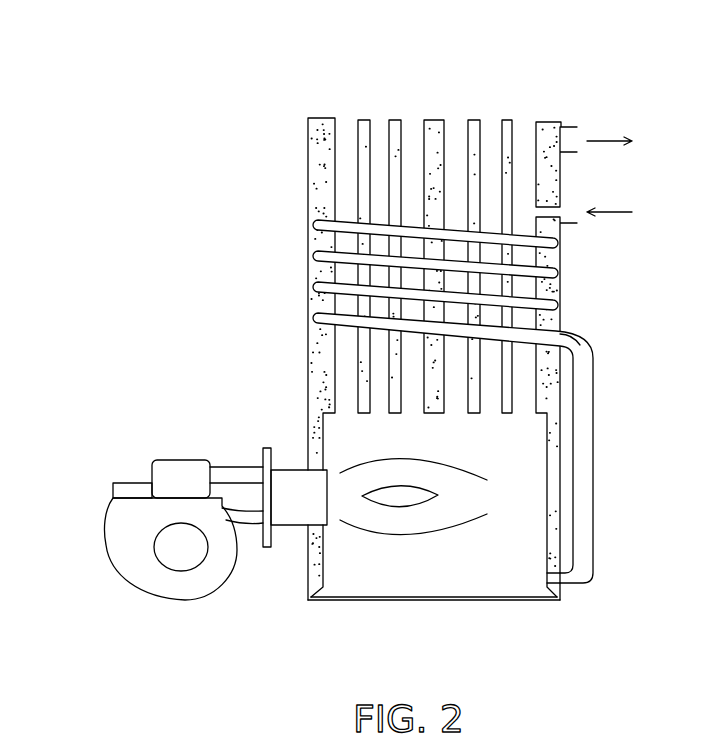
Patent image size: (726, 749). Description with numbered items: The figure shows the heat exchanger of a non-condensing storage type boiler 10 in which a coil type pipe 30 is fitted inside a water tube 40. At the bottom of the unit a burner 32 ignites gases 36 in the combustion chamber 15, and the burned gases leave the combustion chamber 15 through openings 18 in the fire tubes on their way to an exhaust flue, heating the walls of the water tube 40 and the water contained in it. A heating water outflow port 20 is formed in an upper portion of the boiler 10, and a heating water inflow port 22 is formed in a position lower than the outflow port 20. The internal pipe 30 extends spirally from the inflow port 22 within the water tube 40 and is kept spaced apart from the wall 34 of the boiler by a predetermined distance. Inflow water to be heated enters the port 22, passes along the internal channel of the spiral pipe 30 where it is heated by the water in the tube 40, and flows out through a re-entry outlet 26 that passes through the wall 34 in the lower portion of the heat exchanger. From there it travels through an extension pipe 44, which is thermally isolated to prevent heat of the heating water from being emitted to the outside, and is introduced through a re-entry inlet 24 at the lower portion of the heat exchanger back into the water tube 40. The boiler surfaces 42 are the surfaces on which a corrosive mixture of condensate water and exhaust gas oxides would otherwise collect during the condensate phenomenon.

The storage type boiler 10 is at (301, 102).
The combustion chamber 15 is at (438, 588).
The openings 18 is at (456, 128).
The heating water outflow port 20 is at (565, 128).
The heating water inflow port 22 is at (572, 199).
The re-entry inlet 24 is at (568, 580).
The re-entry outlet 26 is at (560, 345).
The coil type pipe 30 is at (330, 270).
The burner 32 is at (112, 544).
The wall 34 is at (560, 272).
The gases 36 is at (357, 520).
The water tube 40 is at (322, 196).
The boiler surfaces 42 is at (540, 180).
The extension pipe 44 is at (593, 500).